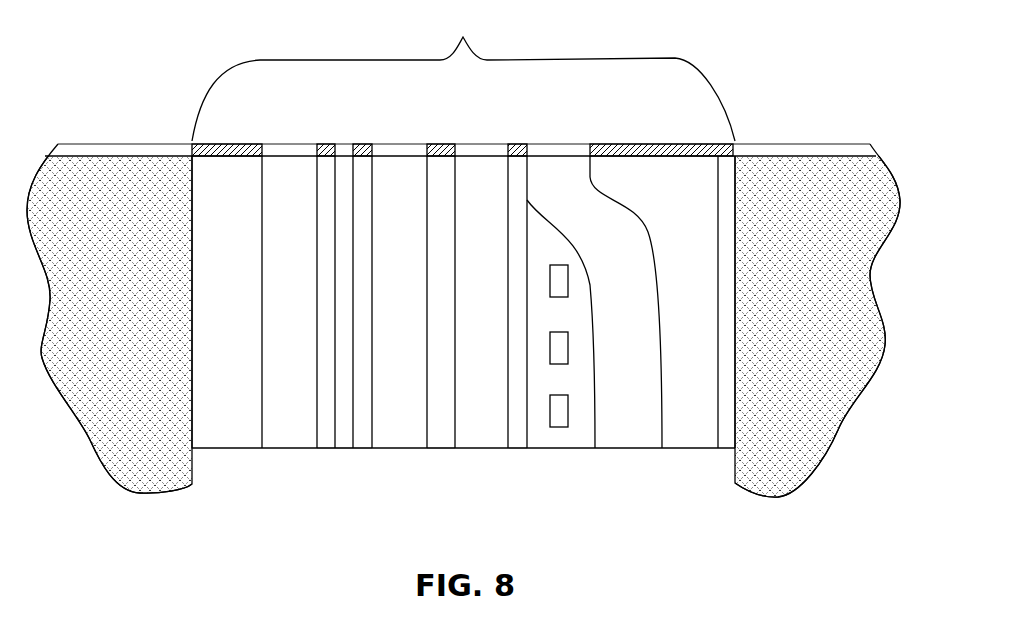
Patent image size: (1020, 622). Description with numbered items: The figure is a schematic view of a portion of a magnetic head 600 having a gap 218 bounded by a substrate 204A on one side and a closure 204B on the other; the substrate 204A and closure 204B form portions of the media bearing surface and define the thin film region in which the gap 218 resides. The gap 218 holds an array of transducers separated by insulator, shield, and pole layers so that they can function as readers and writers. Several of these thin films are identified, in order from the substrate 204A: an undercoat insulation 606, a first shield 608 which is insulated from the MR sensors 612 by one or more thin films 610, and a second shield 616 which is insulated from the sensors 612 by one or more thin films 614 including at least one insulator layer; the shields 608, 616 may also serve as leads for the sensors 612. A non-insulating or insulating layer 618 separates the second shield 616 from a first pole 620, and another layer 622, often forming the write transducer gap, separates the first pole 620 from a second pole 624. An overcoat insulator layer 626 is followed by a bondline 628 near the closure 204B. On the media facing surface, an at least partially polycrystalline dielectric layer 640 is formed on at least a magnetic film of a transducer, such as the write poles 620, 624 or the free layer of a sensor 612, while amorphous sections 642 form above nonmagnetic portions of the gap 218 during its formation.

The gap 218 is at (463, 74).
The magnetic head 600 is at (729, 80).
The at least partially polycrystalline dielectric layer 640 is at (106, 143).
The amorphous sections 642 is at (212, 143).
The substrate 204A is at (157, 260).
The closure 204B is at (832, 260).
The undercoat insulation 606 is at (245, 343).
The first shield 608 is at (290, 449).
The thin films 610 is at (322, 143).
The MR sensors 612 is at (340, 143).
The thin films 614 is at (360, 143).
The second shield 616 is at (400, 449).
The non-insulating (or insulating) layer 618 is at (437, 143).
The first pole 620 is at (488, 449).
The layer 622 is at (513, 143).
The second pole 624 is at (615, 449).
The overcoat insulator layer 626 is at (660, 221).
The bondline 628 is at (729, 449).